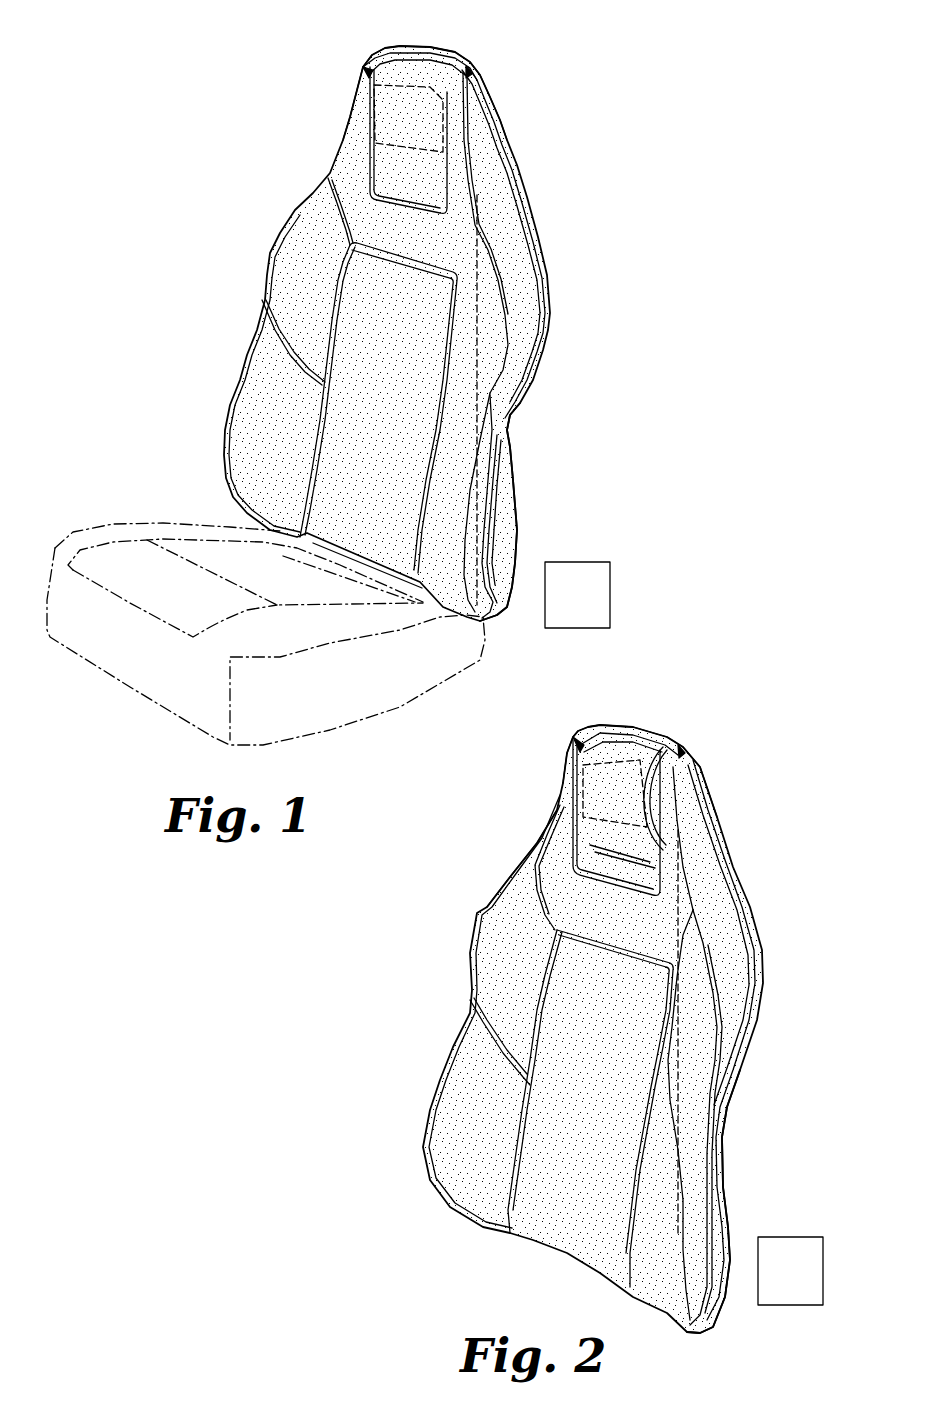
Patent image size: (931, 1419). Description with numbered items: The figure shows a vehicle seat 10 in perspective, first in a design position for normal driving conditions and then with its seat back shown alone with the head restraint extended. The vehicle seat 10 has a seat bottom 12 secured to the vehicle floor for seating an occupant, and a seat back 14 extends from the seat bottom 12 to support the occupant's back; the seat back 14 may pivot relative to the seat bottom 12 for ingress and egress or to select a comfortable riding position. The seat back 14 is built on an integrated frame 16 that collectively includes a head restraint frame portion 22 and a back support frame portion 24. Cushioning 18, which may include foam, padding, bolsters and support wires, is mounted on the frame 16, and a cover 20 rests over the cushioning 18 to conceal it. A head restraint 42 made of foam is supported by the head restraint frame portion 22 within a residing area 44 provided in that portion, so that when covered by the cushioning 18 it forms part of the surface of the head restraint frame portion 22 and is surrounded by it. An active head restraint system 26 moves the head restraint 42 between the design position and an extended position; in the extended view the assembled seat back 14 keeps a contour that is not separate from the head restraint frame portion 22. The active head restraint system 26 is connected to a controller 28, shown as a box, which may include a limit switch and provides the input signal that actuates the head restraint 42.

In FIG. 1, the vehicle seat 10 is at (230, 237).
In FIG. 1, the seat bottom 12 is at (158, 520).
In FIG. 1, the seat back 14 is at (550, 303).
In FIG. 2, the seat back 14 is at (401, 962).
In FIG. 1, the frame 16 is at (517, 547).
In FIG. 2, the frame 16 is at (730, 1230).
In FIG. 1, the cushioning 18 is at (497, 510).
In FIG. 2, the cushioning 18 is at (713, 1207).
In FIG. 1, the cover 20 is at (505, 428).
In FIG. 2, the cover 20 is at (503, 890).
In FIG. 1, the head restraint frame portion 22 is at (505, 127).
In FIG. 2, the head restraint frame portion 22 is at (700, 757).
In FIG. 1, the back support frame portion 24 is at (380, 393).
In FIG. 2, the back support frame portion 24 is at (587, 1087).
In FIG. 1, the active head restraint system 26 is at (358, 105).
In FIG. 2, the active head restraint system 26 is at (578, 786).
In FIG. 1, the controller 28 is at (482, 578).
In FIG. 2, the controller 28 is at (686, 1250).
In FIG. 1, the head restraint 42 is at (407, 117).
In FIG. 2, the head restraint 42 is at (573, 810).
In FIG. 1, the residing area 44 is at (450, 173).
In FIG. 2, the residing area 44 is at (667, 800).